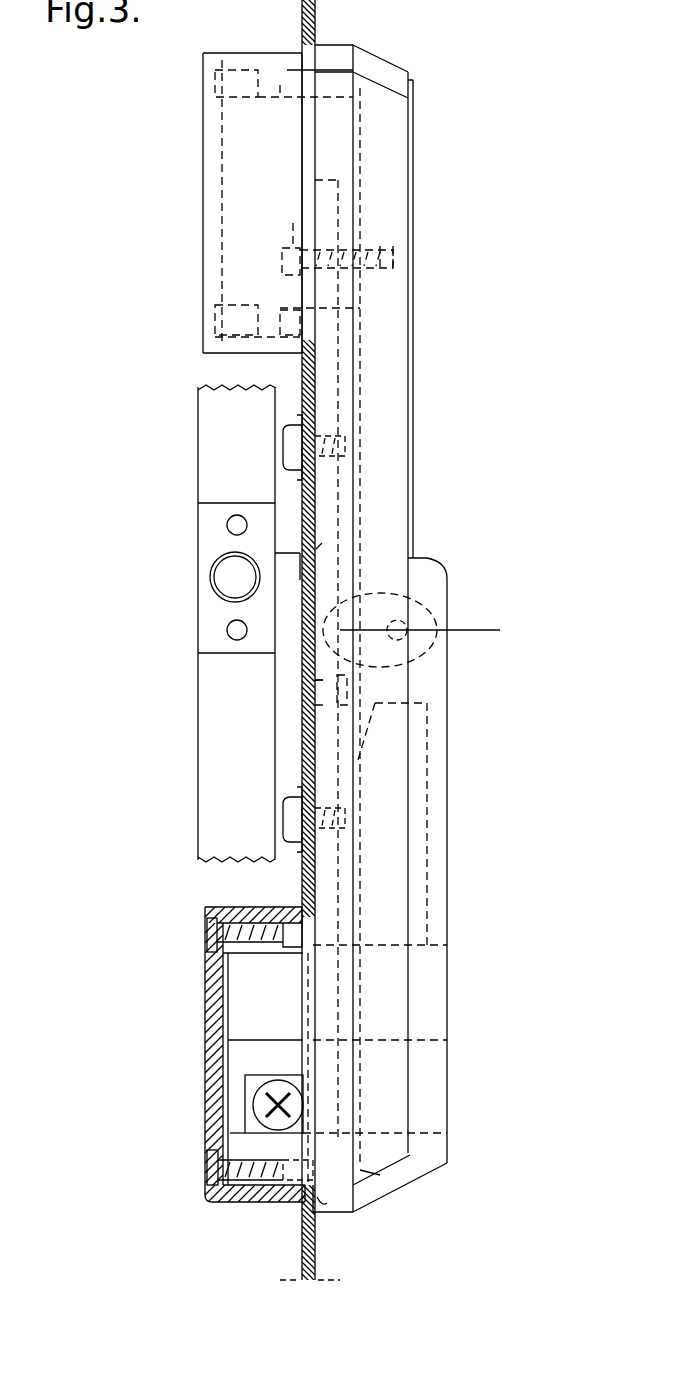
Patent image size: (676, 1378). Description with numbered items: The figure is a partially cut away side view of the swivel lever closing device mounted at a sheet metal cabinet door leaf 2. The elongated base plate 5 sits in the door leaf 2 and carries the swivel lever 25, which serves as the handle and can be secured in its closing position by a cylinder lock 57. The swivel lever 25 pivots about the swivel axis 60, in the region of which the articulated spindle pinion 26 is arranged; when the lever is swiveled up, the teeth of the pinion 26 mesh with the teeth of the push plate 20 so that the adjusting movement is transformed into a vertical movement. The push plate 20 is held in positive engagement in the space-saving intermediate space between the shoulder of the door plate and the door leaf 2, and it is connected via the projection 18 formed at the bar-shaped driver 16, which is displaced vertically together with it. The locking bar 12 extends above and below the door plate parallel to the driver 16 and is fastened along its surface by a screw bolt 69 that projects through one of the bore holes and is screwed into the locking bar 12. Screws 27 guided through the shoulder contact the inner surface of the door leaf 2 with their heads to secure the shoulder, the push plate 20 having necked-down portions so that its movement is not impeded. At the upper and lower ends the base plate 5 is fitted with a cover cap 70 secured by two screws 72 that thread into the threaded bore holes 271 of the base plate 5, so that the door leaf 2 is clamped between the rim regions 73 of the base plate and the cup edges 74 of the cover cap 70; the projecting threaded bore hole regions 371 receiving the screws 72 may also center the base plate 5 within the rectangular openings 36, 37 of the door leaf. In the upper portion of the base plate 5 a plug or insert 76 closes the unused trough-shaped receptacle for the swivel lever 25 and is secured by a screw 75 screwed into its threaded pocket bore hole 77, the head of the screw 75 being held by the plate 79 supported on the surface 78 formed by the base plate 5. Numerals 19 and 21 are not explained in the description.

The door leaf 2 is at (316, 22).
The base plate 5 is at (377, 1192).
The locking bar 12 is at (217, 460).
The driver 16 is at (213, 638).
The projection 18 is at (325, 545).
The upper housing block 19 is at (240, 128).
The push plate 20 is at (480, 906).
The lower housing 21 is at (250, 993).
The swivel lever 25 is at (447, 843).
The articulated spindle pinion 26 is at (323, 680).
The screws 27 is at (283, 814).
The opening 36 is at (300, 152).
The opening 37 is at (300, 1005).
The cylinder lock 57 is at (438, 1068).
The swivel axis 60 is at (480, 632).
The screw bolt 69 is at (213, 572).
The cover cap 70 is at (222, 1200).
The screws 72 is at (205, 1168).
The rim regions 73 is at (318, 1200).
The cup edges 74 is at (305, 1208).
The screw 75 is at (280, 256).
The plug or insert 76 is at (416, 165).
The threaded pocket bore hole 77 is at (395, 262).
The surface 78 is at (297, 300).
The plate 79 is at (293, 228).
The threaded bore holes 271 is at (275, 1195).
The projecting threaded bore hole regions 371 is at (295, 935).